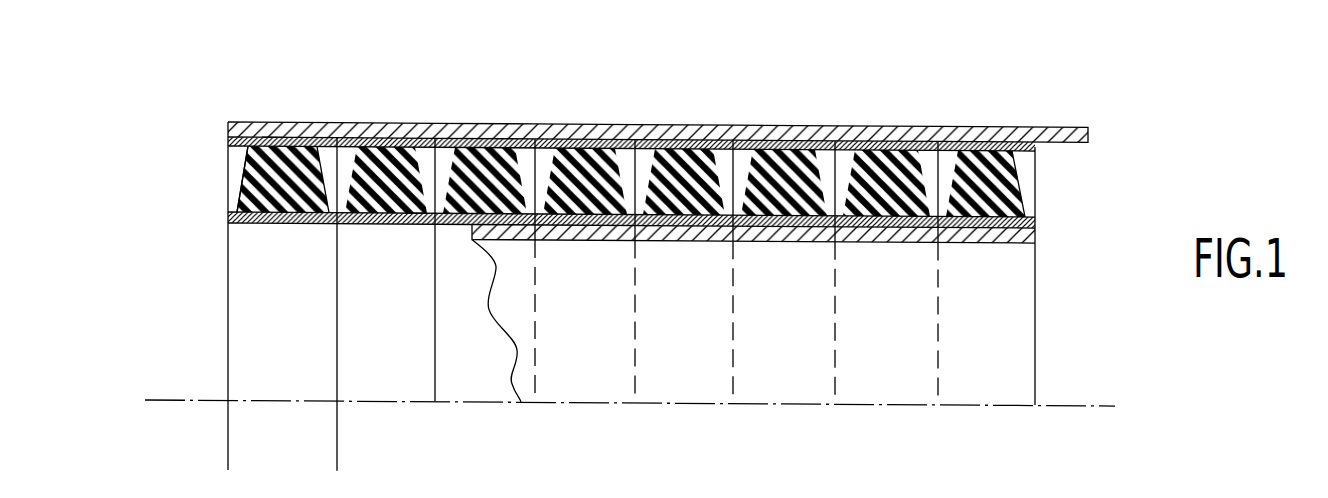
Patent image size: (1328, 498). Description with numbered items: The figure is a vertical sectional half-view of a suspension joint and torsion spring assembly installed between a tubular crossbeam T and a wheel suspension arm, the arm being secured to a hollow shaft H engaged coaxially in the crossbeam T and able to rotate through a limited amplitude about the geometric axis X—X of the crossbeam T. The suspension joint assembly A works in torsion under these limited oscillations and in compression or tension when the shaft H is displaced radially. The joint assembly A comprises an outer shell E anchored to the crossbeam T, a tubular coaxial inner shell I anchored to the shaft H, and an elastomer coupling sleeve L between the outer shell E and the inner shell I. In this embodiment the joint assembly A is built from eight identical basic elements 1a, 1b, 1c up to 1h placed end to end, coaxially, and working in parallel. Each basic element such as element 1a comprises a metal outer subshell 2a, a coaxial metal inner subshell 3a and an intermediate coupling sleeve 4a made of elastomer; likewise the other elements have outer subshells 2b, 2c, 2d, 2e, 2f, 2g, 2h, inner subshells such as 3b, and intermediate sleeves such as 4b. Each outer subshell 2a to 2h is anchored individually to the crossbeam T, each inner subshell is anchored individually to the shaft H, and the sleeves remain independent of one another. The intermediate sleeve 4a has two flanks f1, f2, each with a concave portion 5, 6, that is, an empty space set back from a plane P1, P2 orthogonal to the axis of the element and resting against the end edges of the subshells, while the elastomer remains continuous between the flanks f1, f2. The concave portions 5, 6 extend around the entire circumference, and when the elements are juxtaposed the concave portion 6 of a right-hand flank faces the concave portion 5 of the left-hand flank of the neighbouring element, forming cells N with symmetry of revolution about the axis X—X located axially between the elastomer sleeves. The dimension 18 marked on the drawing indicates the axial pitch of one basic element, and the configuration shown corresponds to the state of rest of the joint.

The basic element 1a is at (255, 315).
The basic element 1b is at (373, 386).
The basic element 1c is at (471, 382).
The basic element 1h is at (1020, 135).
The outer subshell 2a is at (240, 129).
The outer subshell 2b is at (402, 134).
The outer subshell 2c is at (495, 134).
The outer subshell 2d is at (580, 134).
The outer subshell 2e is at (690, 134).
The outer subshell 2f is at (792, 134).
The outer subshell 2g is at (893, 134).
The outer subshell 2h is at (986, 134).
The inner subshell 3a is at (228, 215).
The inner subshell 3b is at (390, 223).
The intermediate coupling sleeve 4a is at (273, 140).
The intermediate coupling sleeve 4b is at (417, 213).
The concave portion 5 is at (356, 145).
The concave portion 6 is at (430, 170).
The cells N is at (343, 154).
The tubular crossbeam T is at (845, 134).
The hollow shaft H is at (580, 238).
The inner shell I is at (1045, 222).
The coupling sleeve L is at (1037, 181).
The outer shell E is at (1045, 143).
The suspension joint assembly A is at (212, 184).
The flank f1 is at (245, 180).
The flank f2 is at (330, 185).
The plane P1 is at (228, 365).
The plane P2 is at (338, 343).
The geometric axis X is at (150, 400).
The pitch dimension 18 is at (363, 457).